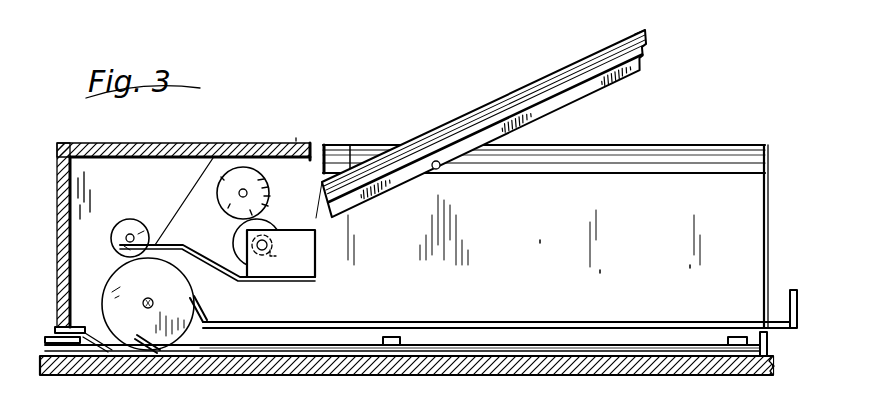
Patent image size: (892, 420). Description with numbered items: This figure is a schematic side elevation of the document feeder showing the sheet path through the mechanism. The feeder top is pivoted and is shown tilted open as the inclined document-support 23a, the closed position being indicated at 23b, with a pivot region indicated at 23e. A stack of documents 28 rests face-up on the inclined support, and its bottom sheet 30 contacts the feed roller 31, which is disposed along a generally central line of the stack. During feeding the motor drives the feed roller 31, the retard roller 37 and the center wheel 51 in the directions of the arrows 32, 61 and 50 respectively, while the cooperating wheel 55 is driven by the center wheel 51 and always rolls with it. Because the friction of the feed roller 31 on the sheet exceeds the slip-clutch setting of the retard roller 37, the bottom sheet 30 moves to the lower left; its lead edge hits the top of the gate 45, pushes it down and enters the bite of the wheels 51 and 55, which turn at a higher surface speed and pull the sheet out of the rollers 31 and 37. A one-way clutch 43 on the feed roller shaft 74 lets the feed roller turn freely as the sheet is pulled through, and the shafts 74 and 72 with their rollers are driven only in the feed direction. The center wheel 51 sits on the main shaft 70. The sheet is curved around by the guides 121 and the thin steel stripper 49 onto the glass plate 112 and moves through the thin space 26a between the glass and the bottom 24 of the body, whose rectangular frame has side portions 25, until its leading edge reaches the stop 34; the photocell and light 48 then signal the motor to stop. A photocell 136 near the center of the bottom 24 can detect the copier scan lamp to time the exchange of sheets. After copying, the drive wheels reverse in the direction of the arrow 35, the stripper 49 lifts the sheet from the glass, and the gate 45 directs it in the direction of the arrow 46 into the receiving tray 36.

The inclined document-support 23a is at (643, 67).
The closed top position 23b is at (690, 172).
The pivot pin 23e is at (436, 160).
The bottom 24 is at (553, 347).
The side portions 25 is at (770, 155).
The opening 26a is at (458, 347).
The stack of documents 28 is at (584, 58).
The bottom sheet 30 is at (302, 206).
The feed roller 31 is at (266, 249).
The arrow 32 is at (241, 248).
The stop 34 is at (770, 350).
The arrow 35 is at (197, 302).
The receiving tray 36 is at (328, 322).
The retard roller 37 is at (241, 167).
The one-way clutch 43 is at (283, 193).
The gate 45 is at (186, 200).
The arrow 46 is at (206, 276).
The photocell and light 48 is at (742, 337).
The stripper 49 is at (100, 347).
The arrow 50 is at (122, 228).
The center wheel 51 is at (118, 255).
The cooperating wheel 55 is at (76, 190).
The arrow 61 is at (236, 176).
The main shaft 70 is at (144, 306).
The shaft 72 is at (243, 193).
The feed roller shaft 74 is at (270, 257).
The glass plate 112 is at (257, 373).
The guides 121 is at (97, 286).
The photocell 136 is at (393, 337).